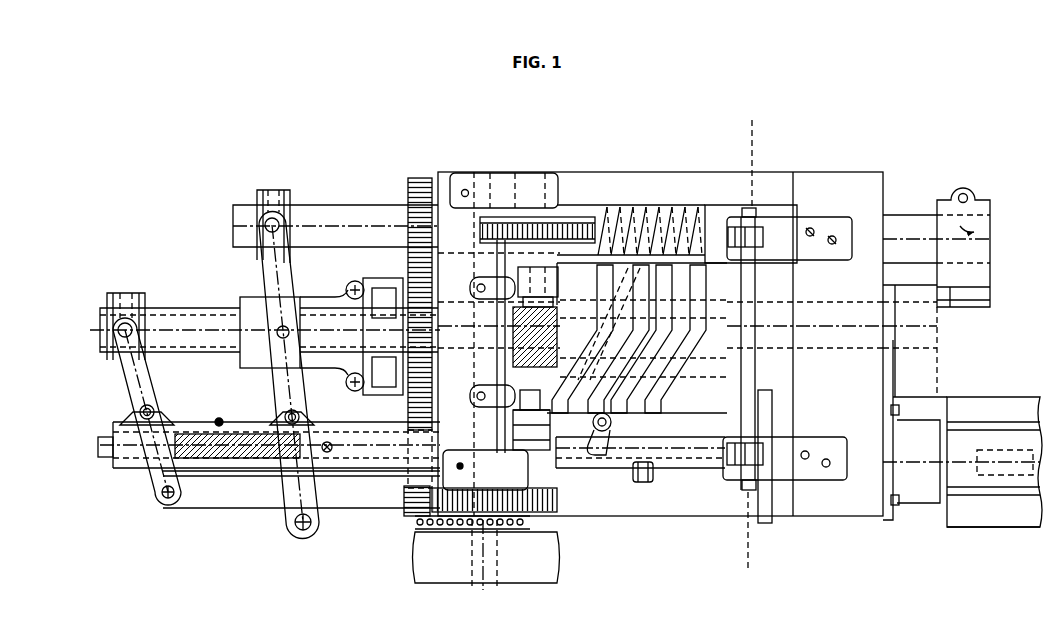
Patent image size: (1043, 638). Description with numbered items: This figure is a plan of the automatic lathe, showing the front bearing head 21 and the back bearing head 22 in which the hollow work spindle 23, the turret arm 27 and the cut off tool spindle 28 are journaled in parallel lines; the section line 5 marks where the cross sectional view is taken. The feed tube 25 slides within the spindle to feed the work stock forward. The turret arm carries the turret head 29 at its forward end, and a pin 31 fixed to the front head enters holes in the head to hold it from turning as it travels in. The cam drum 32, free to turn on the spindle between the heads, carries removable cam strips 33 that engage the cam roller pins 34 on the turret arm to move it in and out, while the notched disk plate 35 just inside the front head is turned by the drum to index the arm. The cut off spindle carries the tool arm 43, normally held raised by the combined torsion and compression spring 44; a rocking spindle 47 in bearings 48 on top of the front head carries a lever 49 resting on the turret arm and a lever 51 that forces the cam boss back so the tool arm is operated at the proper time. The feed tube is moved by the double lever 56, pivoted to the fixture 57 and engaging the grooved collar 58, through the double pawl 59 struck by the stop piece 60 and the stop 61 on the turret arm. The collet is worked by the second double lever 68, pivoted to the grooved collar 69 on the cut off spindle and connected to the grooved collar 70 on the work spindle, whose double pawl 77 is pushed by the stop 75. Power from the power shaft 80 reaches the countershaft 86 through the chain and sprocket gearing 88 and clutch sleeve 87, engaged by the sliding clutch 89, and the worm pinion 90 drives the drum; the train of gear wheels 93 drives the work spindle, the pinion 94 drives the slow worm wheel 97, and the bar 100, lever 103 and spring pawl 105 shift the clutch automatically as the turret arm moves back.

The section line 5 is at (749, 347).
The bearing head 21 is at (660, 344).
The bearing head 22 is at (485, 390).
The hollow work spindle 23 is at (975, 360).
The feed tube 25 is at (265, 330).
The turret arm 27 is at (686, 470).
The cut off tool spindle 28 is at (917, 182).
The turret head 29 is at (1001, 510).
The pin 31 is at (962, 462).
The cam drum 32 is at (572, 284).
The cam strips 33 is at (660, 330).
The cam roller pins 34 is at (645, 485).
The disk plate 35 is at (766, 524).
The tool arm 43 is at (992, 237).
The combined torsion and compression spring 44 is at (641, 206).
The rocking spindle 47 is at (752, 206).
The bearings 48 is at (780, 228).
The lever 49 is at (736, 458).
The lever 51 is at (738, 237).
The double lever 56 is at (133, 380).
The fixture 57 is at (165, 500).
The grooved collar 58 is at (126, 291).
The double pawl 59 is at (163, 408).
The stop piece 60 is at (223, 419).
The stop 61 is at (107, 423).
The double lever 68 is at (270, 275).
The grooved collar 69 is at (273, 222).
The grooved collar 70 is at (257, 187).
The stop 75 is at (334, 443).
The double pawl 77 is at (312, 420).
The power shaft 80 is at (483, 573).
The countershaft 86 is at (553, 514).
The clutch sleeve 87 is at (528, 512).
The chain and sprocket gearing 88 is at (445, 528).
The sliding clutch 89 is at (532, 430).
The worm pinion 90 is at (495, 360).
The train of gear wheels 93 is at (404, 518).
The pinion 94 is at (420, 176).
The worm wheel 97 is at (492, 215).
The bar 100 is at (497, 268).
The lever 103 is at (540, 432).
The spring pawl 105 is at (566, 430).